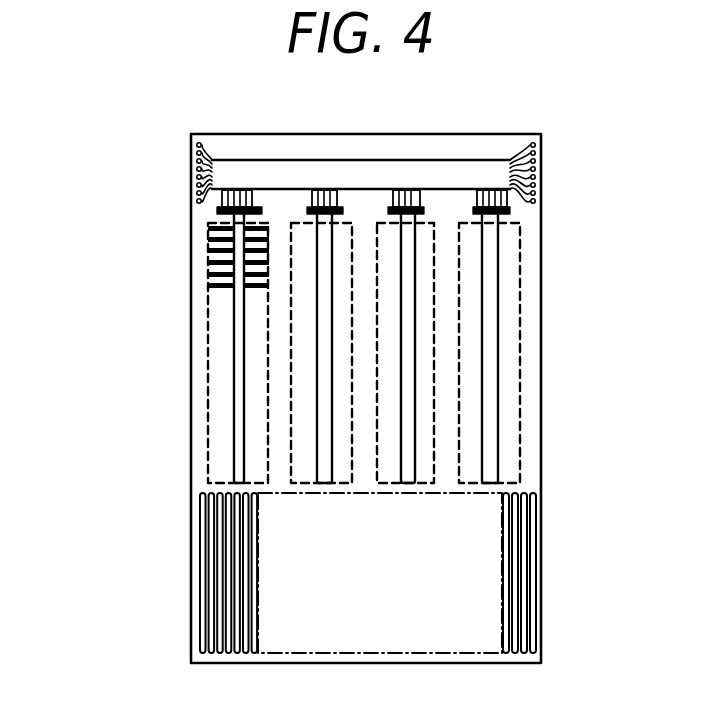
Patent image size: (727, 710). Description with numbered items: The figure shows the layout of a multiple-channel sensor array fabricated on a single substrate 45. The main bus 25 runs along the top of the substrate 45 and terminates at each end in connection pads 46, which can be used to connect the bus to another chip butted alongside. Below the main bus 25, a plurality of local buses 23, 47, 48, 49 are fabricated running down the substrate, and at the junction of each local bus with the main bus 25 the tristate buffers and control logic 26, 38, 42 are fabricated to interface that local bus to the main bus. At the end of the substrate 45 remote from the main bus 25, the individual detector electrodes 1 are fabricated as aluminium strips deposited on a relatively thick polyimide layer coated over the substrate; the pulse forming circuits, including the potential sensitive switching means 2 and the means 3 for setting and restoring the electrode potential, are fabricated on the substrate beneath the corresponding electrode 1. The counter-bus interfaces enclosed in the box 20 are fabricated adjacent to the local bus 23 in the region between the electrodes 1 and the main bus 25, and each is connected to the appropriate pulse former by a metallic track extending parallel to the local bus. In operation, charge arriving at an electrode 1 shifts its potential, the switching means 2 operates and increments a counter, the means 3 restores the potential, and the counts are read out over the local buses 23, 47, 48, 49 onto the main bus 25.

The electrode 1 is at (370, 573).
The potential sensitive switching means 2 is at (370, 573).
The means for restoring the potential of the electrode 3 is at (205, 558).
The box enclosing the counter-bus interfaces 20 is at (208, 284).
The local bus 23 is at (238, 342).
The main bus 25 is at (395, 178).
The tristate buffers and control logic 26 is at (155, 211).
The tristate buffers and control logic 38 is at (155, 211).
The tristate buffers and control logic 42 is at (214, 214).
The substrate 45 is at (527, 279).
The connection pads 46 is at (192, 165).
The local bus 47 is at (322, 393).
The local bus 48 is at (407, 367).
The local bus 49 is at (490, 412).